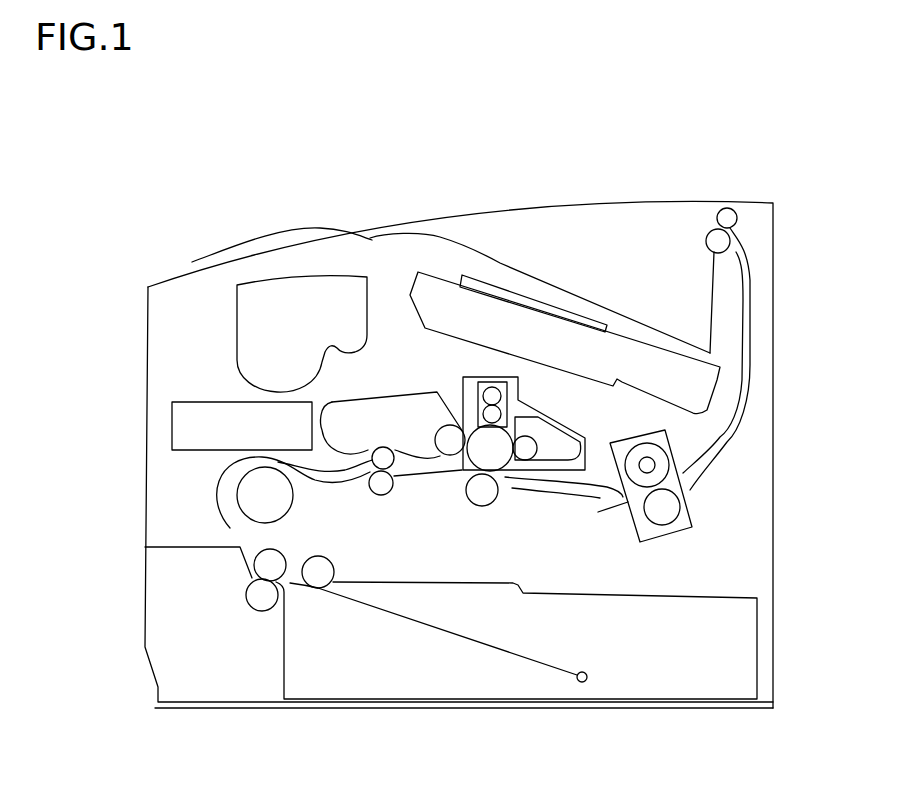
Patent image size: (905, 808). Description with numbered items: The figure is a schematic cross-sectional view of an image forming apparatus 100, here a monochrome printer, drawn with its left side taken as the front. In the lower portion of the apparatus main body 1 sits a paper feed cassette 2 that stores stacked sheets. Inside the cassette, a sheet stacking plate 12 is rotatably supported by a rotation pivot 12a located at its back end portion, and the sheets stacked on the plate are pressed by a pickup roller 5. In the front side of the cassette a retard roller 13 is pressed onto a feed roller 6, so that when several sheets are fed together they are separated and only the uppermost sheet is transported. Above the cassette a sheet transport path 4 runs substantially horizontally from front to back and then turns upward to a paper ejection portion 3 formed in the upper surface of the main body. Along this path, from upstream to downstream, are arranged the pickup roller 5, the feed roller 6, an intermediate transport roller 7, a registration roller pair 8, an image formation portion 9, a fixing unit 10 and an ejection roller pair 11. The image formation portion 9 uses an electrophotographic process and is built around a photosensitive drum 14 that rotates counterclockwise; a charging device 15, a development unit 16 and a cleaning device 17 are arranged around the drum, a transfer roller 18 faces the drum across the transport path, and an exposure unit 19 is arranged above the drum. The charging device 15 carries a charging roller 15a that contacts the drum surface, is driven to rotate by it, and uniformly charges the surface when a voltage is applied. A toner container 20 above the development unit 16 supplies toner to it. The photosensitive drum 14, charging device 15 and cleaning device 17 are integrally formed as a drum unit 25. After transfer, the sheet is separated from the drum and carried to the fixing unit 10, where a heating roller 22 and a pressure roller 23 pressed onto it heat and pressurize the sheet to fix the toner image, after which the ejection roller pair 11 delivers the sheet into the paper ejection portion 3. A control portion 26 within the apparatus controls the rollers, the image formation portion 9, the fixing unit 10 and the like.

The image forming apparatus 100 is at (266, 210).
The apparatus main body 1 is at (778, 247).
The paper feed cassette 2 is at (136, 623).
The paper ejection portion 3 is at (613, 305).
The sheet transport path 4 is at (747, 343).
The pickup roller 5 is at (318, 574).
The feed roller 6 is at (270, 566).
The intermediate transport roller 7 is at (263, 495).
The registration roller pair 8 is at (358, 490).
The image formation portion 9 is at (516, 508).
The fixing unit 10 is at (708, 511).
The ejection roller pair 11 is at (709, 208).
The sheet stacking plate 12 is at (462, 638).
The rotation pivot 12a is at (583, 682).
The retard roller 13 is at (260, 597).
The photosensitive drum 14 is at (490, 448).
The charging device 15 is at (475, 377).
The charging roller 15a is at (488, 410).
The development unit 16 is at (402, 423).
The cleaning device 17 is at (565, 447).
The transfer roller 18 is at (482, 490).
The exposure unit 19 is at (522, 335).
The toner container 20 is at (277, 345).
The heating roller 22 is at (647, 465).
The pressure roller 23 is at (660, 507).
The drum unit 25 is at (520, 403).
The control portion 26 is at (172, 417).